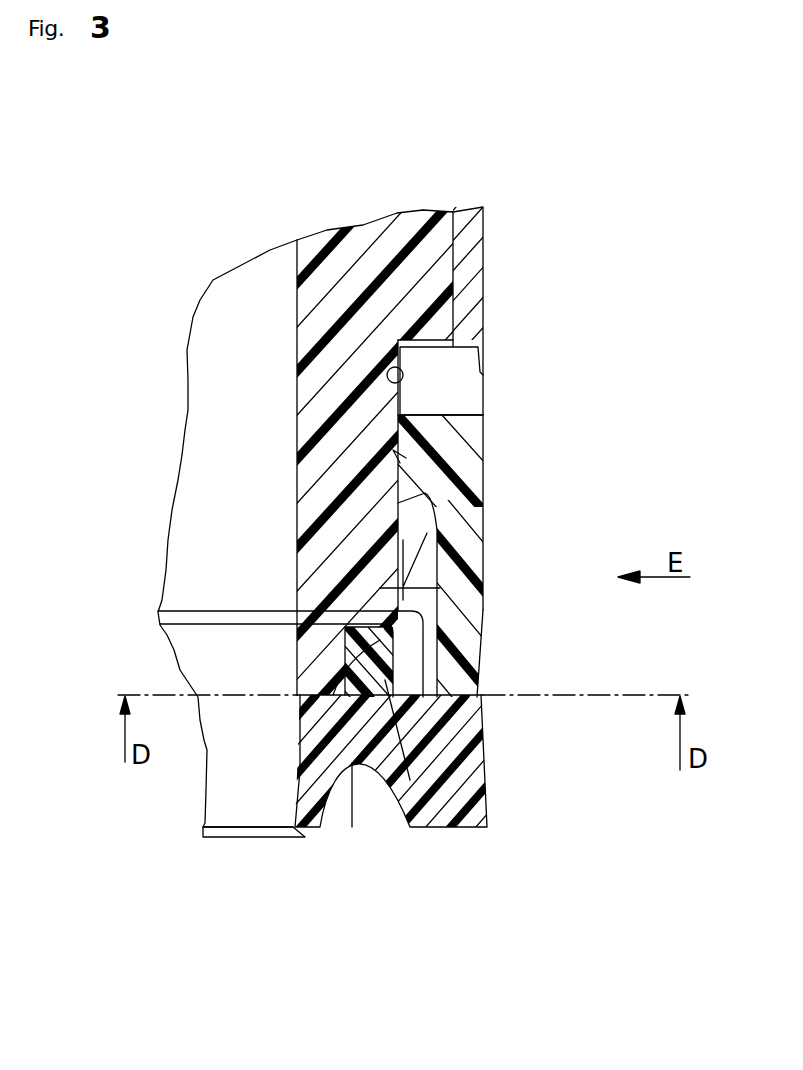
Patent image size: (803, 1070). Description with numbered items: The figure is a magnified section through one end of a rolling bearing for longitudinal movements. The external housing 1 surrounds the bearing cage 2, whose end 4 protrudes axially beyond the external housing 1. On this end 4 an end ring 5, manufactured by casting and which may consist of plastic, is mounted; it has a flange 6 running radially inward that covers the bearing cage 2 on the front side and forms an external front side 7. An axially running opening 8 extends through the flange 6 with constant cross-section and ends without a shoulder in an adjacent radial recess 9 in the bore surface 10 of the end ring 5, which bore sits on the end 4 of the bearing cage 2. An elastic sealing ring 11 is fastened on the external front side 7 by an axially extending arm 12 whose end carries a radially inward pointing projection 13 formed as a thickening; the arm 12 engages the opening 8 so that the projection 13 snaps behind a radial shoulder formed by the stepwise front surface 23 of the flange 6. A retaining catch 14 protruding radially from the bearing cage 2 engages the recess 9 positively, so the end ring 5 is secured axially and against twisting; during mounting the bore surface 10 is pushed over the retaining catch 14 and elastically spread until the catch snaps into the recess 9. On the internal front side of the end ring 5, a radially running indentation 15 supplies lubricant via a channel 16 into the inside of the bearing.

The external housing 1 is at (472, 266).
The bearing cage 2 is at (363, 317).
The end 4 is at (418, 580).
The end ring 5 is at (455, 442).
The flange 6 is at (352, 827).
The external front side 7 is at (410, 780).
The opening 8 is at (440, 650).
The radial recess 9 is at (400, 586).
The bore surface 10 is at (395, 452).
The sealing ring 11 is at (430, 740).
The arm 12 is at (410, 677).
The projection 13 is at (440, 628).
The retaining catch 14 is at (423, 528).
The indentation 15 is at (455, 384).
The channel 16 is at (396, 373).
The stepwise front surface 23 is at (360, 648).